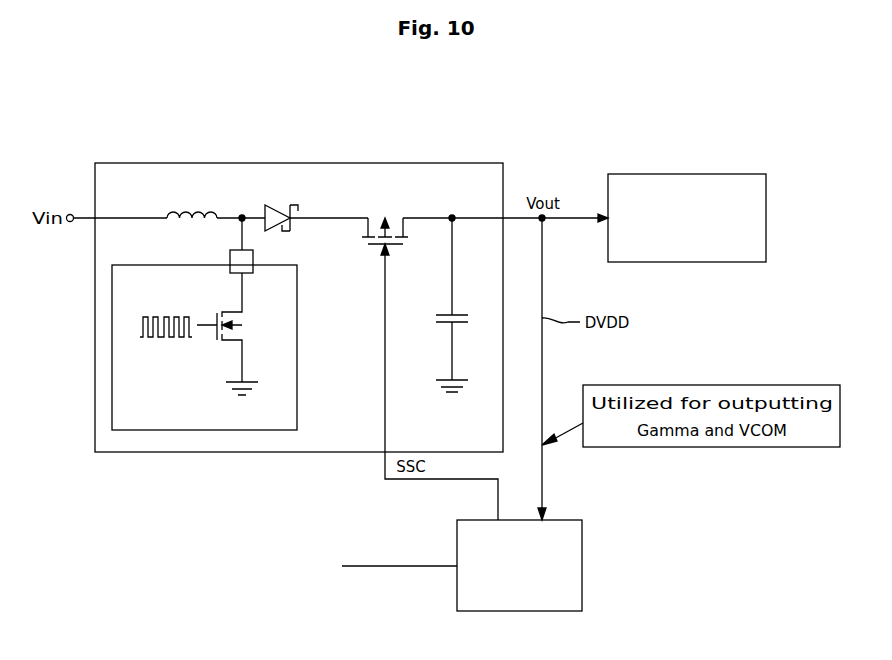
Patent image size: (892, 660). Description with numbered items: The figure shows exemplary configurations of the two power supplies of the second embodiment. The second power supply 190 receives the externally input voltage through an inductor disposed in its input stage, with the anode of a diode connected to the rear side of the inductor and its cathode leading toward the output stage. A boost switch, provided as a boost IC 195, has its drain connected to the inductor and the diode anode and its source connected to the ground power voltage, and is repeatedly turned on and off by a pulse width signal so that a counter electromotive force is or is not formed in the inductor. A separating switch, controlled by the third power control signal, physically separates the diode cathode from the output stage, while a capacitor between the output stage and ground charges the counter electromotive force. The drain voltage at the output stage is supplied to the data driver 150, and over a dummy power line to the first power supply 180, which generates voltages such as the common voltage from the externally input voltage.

The second power supply 190 is at (297, 163).
The boost IC 195 is at (297, 352).
The data driver 150 is at (685, 174).
The first power supply 180 is at (582, 566).